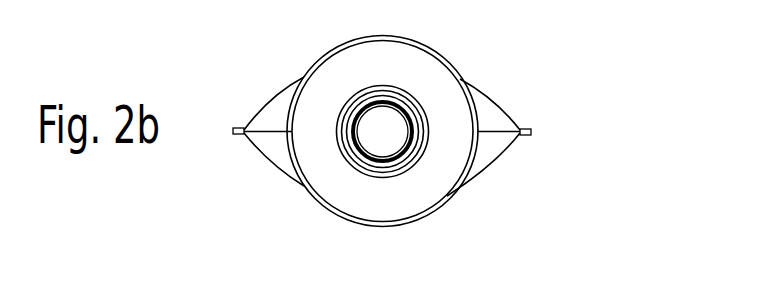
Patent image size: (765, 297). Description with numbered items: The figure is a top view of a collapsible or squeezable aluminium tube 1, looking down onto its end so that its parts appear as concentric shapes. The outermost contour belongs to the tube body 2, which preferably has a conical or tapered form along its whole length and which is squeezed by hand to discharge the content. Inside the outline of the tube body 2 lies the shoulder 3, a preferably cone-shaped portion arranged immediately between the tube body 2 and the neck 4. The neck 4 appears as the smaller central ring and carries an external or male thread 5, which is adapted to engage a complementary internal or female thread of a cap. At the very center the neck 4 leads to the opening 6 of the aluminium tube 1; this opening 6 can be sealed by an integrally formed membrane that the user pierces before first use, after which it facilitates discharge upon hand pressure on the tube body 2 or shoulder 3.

The aluminium tube 1 is at (598, 78).
The tube body 2 is at (497, 149).
The shoulder 3 is at (489, 108).
The neck 4 is at (343, 152).
The external or male thread 5 is at (412, 160).
The opening 6 is at (378, 128).